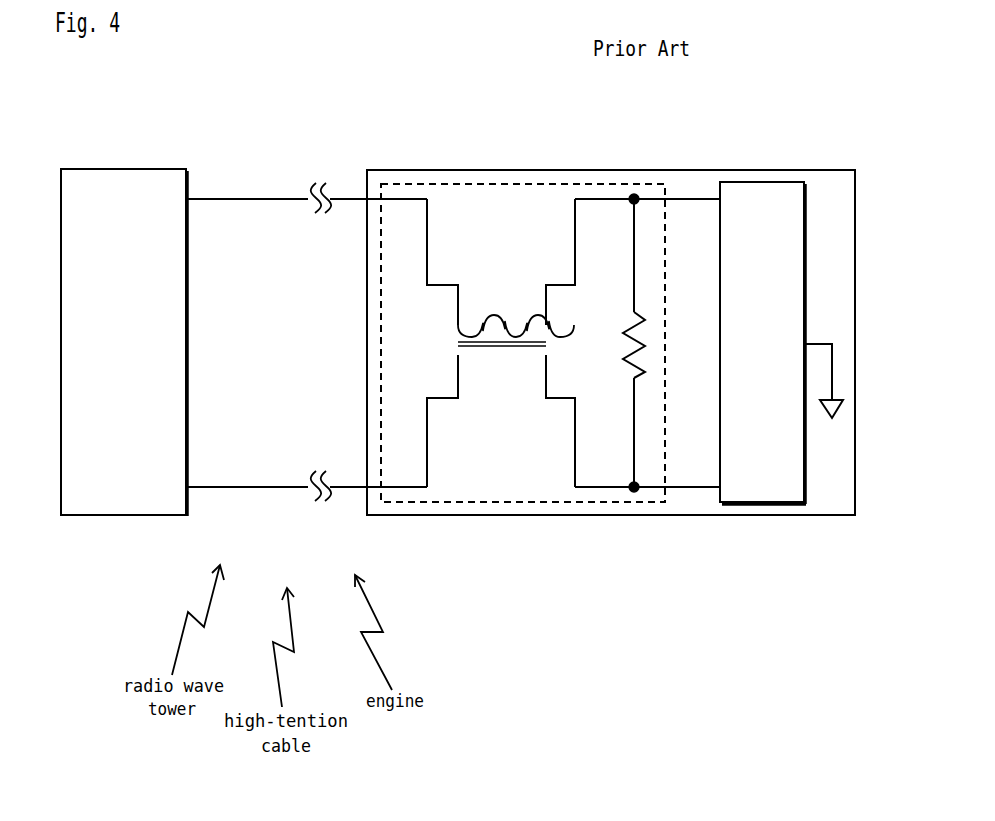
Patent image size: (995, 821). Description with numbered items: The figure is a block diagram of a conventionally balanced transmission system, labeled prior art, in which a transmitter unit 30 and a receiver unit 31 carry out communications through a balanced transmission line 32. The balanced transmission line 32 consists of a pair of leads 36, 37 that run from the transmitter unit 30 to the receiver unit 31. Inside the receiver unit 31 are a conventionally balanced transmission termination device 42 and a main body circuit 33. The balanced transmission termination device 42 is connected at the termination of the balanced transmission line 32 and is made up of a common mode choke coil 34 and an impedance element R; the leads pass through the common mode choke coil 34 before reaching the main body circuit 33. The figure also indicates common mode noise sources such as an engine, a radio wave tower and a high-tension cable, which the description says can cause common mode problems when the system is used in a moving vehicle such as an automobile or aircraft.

The transmitter unit 30 is at (175, 168).
The receiver unit 31 is at (611, 331).
The balanced transmission line 32 is at (270, 182).
The main body circuit 33 is at (738, 507).
The common mode choke coil 34 is at (502, 375).
The lead 36 is at (343, 200).
The lead 37 is at (348, 489).
The balanced transmission termination device 42 is at (423, 502).